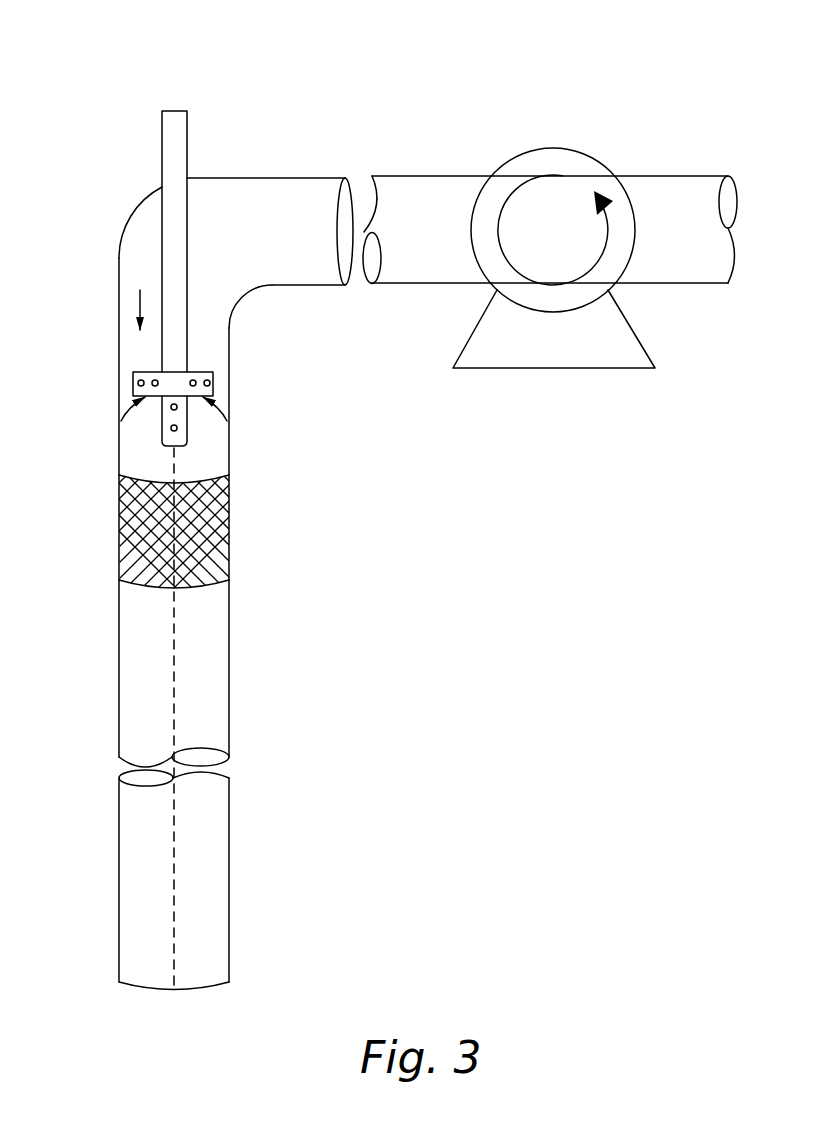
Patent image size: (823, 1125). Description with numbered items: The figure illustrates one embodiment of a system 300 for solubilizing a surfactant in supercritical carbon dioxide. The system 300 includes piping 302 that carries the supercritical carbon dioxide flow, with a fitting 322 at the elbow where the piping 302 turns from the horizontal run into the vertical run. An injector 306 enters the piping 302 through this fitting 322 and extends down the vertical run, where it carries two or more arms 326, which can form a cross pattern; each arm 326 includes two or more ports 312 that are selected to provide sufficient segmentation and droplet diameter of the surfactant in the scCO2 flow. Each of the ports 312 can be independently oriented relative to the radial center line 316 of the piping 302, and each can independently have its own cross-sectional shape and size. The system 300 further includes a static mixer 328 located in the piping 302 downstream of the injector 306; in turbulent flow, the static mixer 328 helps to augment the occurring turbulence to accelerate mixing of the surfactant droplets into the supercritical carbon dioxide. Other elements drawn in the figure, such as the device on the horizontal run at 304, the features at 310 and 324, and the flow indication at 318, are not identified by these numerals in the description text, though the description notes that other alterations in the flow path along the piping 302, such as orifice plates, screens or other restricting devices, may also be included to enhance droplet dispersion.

The system 300 is at (75, 73).
The piping 302 is at (278, 179).
The valve 304 is at (592, 138).
The injector 306 is at (183, 143).
The outlet holes 310 is at (172, 382).
The ports 312 is at (203, 377).
The radial center line 316 is at (172, 693).
The gas flow direction 318 is at (143, 295).
The fitting 322 is at (127, 211).
The elbow inner wall 324 is at (243, 297).
The arms 326 is at (150, 421).
The static mixer 328 is at (230, 545).